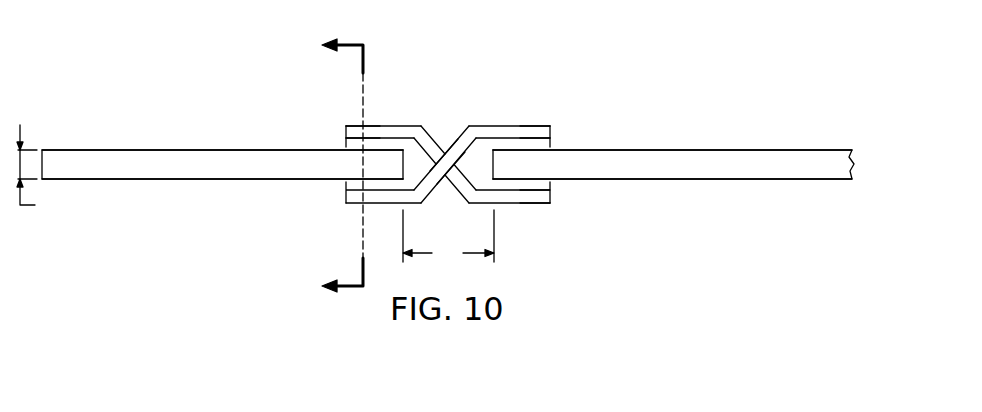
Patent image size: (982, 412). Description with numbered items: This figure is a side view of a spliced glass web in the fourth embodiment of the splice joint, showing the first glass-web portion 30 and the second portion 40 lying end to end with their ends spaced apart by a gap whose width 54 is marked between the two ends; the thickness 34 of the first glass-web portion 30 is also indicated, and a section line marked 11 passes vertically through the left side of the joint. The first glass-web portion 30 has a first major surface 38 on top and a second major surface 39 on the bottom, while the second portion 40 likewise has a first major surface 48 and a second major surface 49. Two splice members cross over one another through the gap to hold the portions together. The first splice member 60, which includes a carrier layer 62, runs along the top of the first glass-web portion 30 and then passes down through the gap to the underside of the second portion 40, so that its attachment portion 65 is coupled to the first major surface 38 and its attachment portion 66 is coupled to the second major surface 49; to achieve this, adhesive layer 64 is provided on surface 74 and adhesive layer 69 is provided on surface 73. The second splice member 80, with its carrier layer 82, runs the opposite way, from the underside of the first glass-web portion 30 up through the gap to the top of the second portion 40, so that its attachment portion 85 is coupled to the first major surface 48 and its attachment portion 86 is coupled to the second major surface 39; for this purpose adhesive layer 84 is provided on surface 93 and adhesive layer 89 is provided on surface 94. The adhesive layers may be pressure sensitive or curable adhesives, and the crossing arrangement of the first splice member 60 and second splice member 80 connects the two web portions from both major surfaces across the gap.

The section line 11- 11 is at (330, 167).
The first glass-web portion 30 is at (107, 150).
The thickness 34 is at (43, 172).
The first major surface 38 is at (68, 150).
The second major surface 39 is at (78, 180).
The second portion 40 is at (700, 150).
The first major surface 48 is at (785, 150).
The second major surface 49 is at (785, 179).
The width 54 is at (448, 239).
The first splice member 60 is at (420, 132).
The carrier layer 62 is at (372, 130).
The adhesive layer 64 is at (346, 147).
The attachment portion 65 is at (346, 127).
The attachment portion 66 is at (550, 203).
The adhesive layer 69 is at (550, 182).
The surface 73 is at (352, 126).
The surface 74 is at (525, 204).
The second splice member 80 is at (472, 137).
The carrier layer 82 is at (498, 130).
The adhesive layer 84 is at (346, 182).
The attachment portion 85 is at (346, 203).
The attachment portion 86 is at (550, 127).
The adhesive layer 89 is at (550, 147).
The surface 93 is at (544, 126).
The surface 94 is at (440, 193).